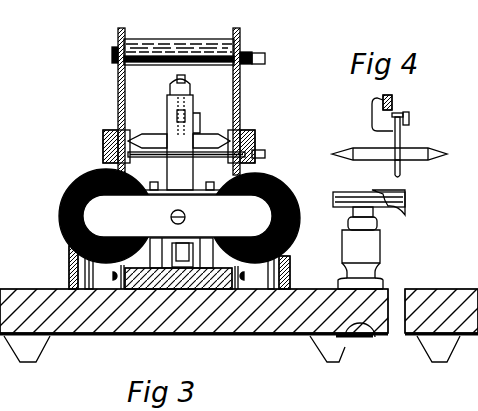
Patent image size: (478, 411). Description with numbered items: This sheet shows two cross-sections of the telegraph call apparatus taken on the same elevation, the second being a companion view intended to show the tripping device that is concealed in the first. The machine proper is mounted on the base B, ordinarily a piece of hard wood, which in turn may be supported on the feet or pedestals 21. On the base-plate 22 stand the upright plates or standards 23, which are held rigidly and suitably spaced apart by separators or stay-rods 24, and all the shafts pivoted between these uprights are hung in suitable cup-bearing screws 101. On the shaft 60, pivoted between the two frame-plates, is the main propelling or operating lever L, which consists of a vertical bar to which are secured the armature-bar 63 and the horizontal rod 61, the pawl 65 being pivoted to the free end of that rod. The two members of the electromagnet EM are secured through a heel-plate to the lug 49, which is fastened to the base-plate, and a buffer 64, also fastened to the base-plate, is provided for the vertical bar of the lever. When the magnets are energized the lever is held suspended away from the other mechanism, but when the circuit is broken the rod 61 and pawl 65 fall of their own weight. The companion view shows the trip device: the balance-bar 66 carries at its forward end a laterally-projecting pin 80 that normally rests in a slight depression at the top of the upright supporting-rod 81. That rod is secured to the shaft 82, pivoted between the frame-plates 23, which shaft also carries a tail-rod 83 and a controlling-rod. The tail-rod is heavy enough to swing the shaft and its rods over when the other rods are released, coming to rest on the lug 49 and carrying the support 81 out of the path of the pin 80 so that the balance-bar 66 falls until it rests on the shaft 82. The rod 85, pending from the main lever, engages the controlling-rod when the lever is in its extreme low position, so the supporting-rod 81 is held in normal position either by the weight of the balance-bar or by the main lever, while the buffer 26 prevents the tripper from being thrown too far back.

In FIG. 3, the feet or pedestals 21 is at (40, 341).
In FIG. 3, the base-plate 22 is at (135, 292).
In FIG. 3, the upright plates or standards 23 is at (117, 78).
In FIG. 3, the separators or stay-rods 24 is at (179, 43).
In FIG. 3, the buffer 26 is at (265, 154).
In FIG. 3, the lug 49 is at (197, 188).
In FIG. 4, the lug 49 is at (405, 203).
In FIG. 3, the shaft 60 is at (190, 129).
In FIG. 4, the horizontal rod 61 is at (382, 98).
In FIG. 3, the armature-bar 63 is at (177, 216).
In FIG. 3, the buffer 64 is at (198, 262).
In FIG. 3, the pawl 65 is at (186, 78).
In FIG. 3, the balance-bar 66 is at (200, 124).
In FIG. 4, the balance-bar 66 is at (409, 118).
In FIG. 4, the laterally-projecting pin 80 is at (399, 113).
In FIG. 4, the trip-rod or supporting-rod 81 is at (416, 125).
In FIG. 4, the shaft 82 is at (430, 158).
In FIG. 4, the tail-rod 83 is at (394, 170).
In FIG. 4, the rod 85 is at (376, 115).
In FIG. 3, the cup-bearing screws 101 is at (103, 143).
In FIG. 3, the electromagnet EM is at (60, 216).
In FIG. 3, the main propelling or operating lever L is at (152, 107).
In FIG. 3, the base B is at (234, 333).